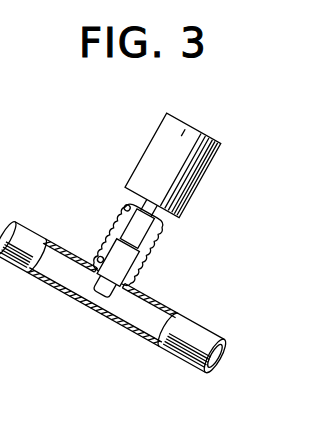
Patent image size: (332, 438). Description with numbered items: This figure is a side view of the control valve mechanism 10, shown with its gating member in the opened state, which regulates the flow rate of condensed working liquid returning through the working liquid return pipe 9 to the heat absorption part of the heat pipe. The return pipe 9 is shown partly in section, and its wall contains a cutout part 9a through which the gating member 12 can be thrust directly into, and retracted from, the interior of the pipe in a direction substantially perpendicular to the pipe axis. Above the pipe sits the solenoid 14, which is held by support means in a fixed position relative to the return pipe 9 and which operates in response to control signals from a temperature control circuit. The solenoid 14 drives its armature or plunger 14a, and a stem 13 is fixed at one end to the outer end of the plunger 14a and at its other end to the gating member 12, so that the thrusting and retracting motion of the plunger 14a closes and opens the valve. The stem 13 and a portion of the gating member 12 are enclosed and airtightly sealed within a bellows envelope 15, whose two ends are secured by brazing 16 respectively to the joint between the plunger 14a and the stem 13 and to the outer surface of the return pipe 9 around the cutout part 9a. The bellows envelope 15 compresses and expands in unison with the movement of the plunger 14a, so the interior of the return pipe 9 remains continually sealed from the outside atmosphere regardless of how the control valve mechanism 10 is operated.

The working liquid return pipe 9 is at (140, 338).
The cutout part 9a is at (90, 298).
The control valve mechanism 10 is at (148, 206).
The gating member 12 is at (138, 272).
The stem 13 is at (152, 243).
The solenoid 14 is at (122, 193).
The plunger 14a is at (172, 223).
The bellows envelope 15 is at (113, 222).
The brazing 16 is at (128, 206).